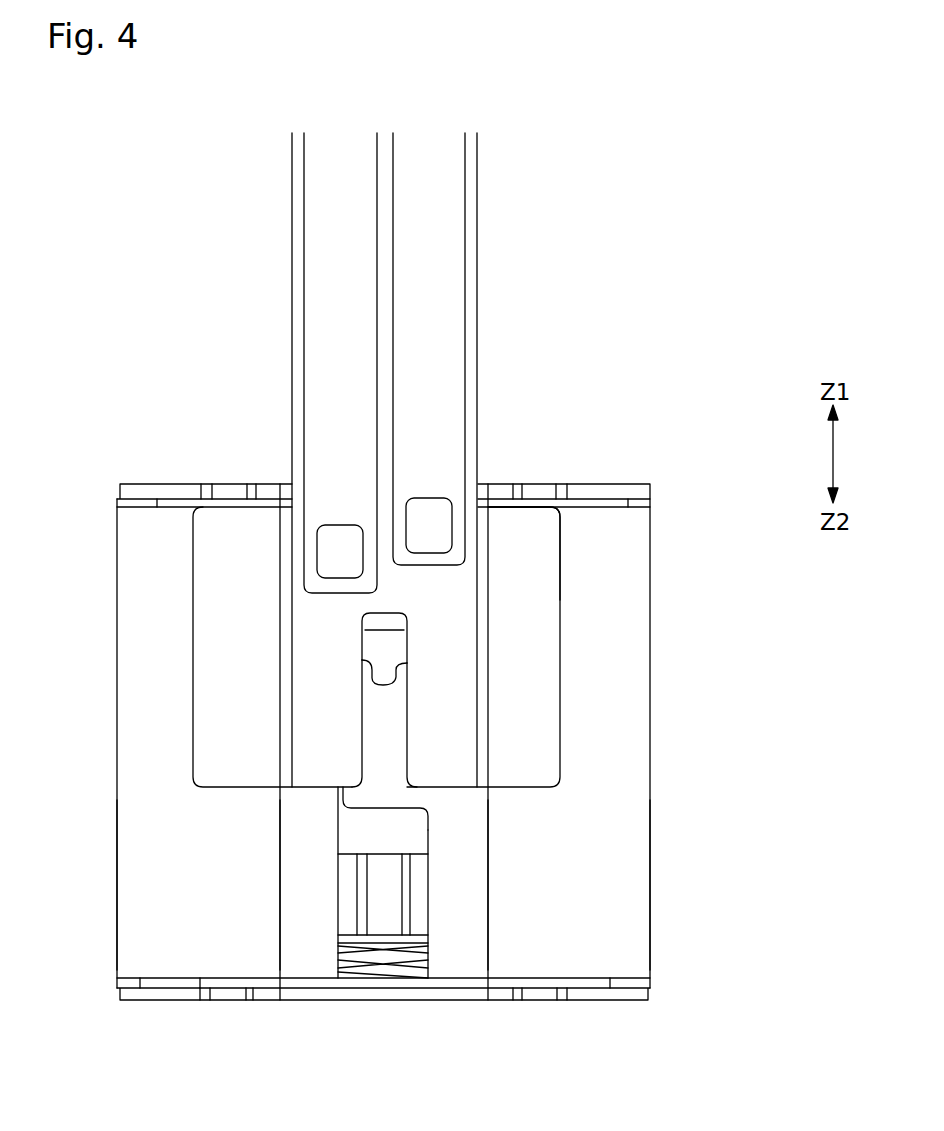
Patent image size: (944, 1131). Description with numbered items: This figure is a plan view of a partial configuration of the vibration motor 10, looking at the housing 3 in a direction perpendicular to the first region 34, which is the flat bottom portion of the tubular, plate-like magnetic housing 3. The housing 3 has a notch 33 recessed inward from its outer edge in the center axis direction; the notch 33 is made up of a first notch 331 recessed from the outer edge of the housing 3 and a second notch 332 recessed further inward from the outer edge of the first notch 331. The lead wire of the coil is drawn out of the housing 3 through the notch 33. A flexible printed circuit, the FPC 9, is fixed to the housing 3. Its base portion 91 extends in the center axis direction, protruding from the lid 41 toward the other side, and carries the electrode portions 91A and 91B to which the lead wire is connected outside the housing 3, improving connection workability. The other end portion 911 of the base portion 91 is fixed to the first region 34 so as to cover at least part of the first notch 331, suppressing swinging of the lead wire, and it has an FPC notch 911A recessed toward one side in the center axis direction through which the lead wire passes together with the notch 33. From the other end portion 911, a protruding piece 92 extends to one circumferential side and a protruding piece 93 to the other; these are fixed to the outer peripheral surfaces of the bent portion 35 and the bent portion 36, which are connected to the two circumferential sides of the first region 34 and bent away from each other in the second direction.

The housing 3 is at (469, 744).
The flexible printed circuit (FPC) 9 is at (536, 508).
The vibration motor 10 is at (624, 386).
The notch 33 is at (586, 693).
The first notch 331 is at (383, 652).
The second notch 332 is at (398, 667).
The first region 34 is at (457, 960).
The bent portion 35 is at (197, 937).
The bent portion 36 is at (547, 953).
The lid 41 is at (610, 492).
The base portion 91 is at (470, 227).
The electrode portion 91A is at (340, 537).
The electrode portion 91B is at (423, 515).
The protruding piece 92 is at (238, 528).
The protruding piece 93 is at (520, 522).
The other end portion 911 is at (456, 760).
The FPC notch 911A is at (405, 737).